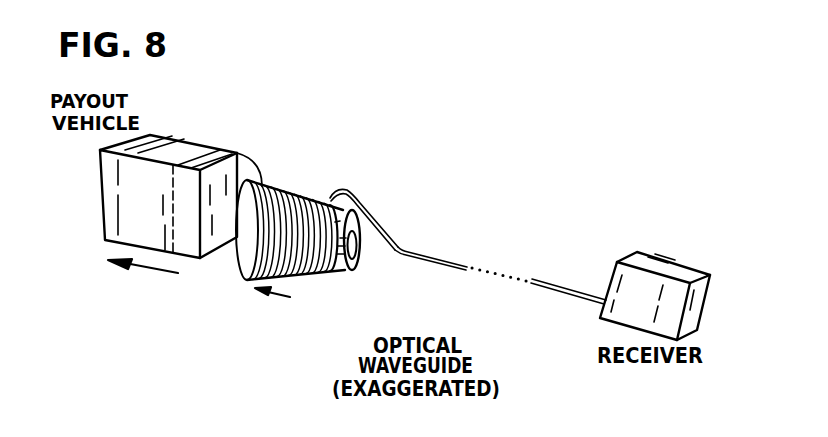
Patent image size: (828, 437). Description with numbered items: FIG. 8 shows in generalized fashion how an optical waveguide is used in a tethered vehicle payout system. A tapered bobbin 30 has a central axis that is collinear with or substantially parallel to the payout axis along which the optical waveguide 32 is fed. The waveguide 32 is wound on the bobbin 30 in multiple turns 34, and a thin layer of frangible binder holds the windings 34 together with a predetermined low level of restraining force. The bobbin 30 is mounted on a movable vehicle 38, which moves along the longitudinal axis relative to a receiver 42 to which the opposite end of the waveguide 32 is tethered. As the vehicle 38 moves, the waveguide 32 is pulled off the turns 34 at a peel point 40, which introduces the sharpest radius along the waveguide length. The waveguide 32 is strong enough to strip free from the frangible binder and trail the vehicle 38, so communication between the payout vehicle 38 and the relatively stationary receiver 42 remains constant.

The tapered bobbin 30 is at (328, 273).
The optical waveguide 32 is at (417, 327).
The turns 34 is at (286, 186).
The movable vehicle 38 is at (213, 155).
The peel point 40 is at (347, 191).
The receiver 42 is at (687, 272).